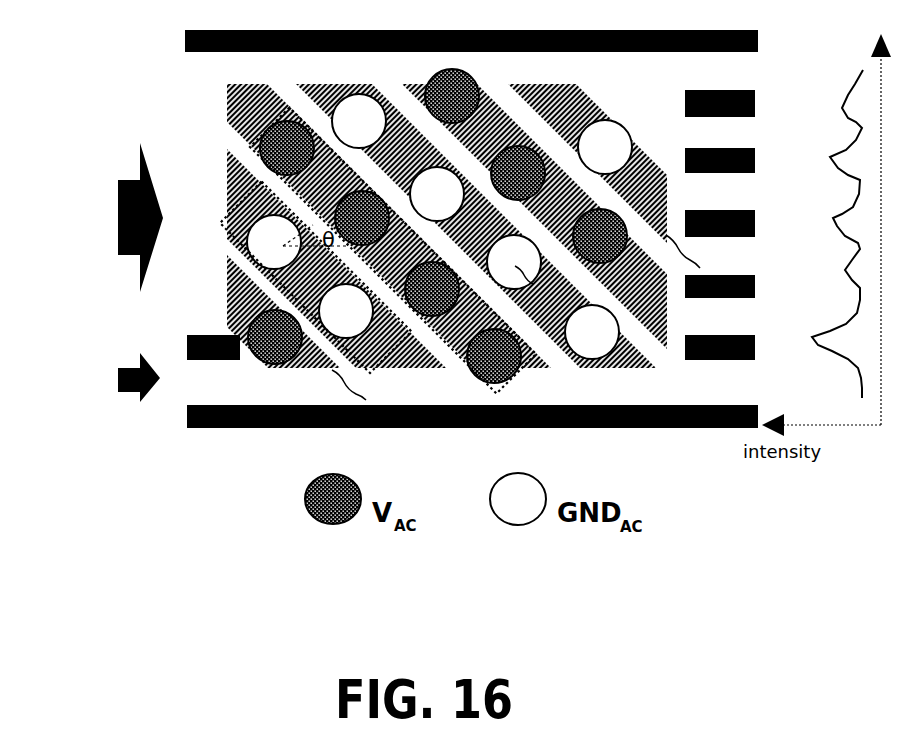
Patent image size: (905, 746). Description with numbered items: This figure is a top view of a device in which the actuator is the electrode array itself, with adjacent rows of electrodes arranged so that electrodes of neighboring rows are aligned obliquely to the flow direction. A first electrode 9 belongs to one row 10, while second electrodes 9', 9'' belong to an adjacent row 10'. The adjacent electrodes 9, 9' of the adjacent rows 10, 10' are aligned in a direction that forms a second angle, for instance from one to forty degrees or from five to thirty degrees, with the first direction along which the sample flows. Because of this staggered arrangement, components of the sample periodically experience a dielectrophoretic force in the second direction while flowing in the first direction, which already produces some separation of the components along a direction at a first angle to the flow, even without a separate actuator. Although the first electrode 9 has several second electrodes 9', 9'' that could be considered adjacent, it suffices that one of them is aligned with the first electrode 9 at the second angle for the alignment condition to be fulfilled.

The first electrode 9 is at (274, 242).
The second electrode 9' is at (362, 218).
The second electrode 9'' is at (287, 148).
The row 10 is at (317, 292).
The adjacent row 10' is at (414, 254).